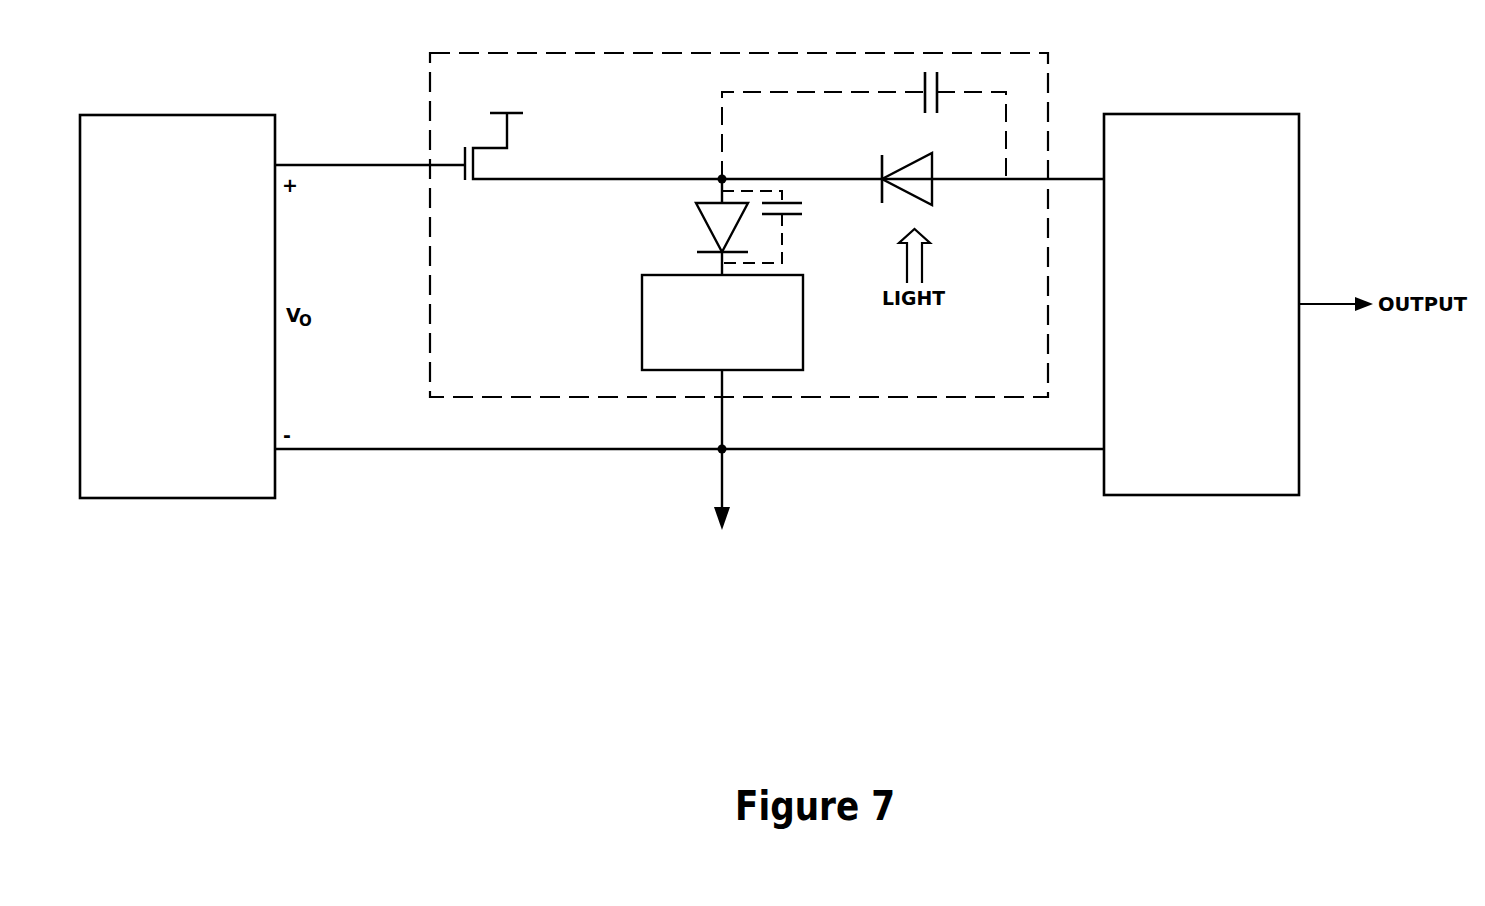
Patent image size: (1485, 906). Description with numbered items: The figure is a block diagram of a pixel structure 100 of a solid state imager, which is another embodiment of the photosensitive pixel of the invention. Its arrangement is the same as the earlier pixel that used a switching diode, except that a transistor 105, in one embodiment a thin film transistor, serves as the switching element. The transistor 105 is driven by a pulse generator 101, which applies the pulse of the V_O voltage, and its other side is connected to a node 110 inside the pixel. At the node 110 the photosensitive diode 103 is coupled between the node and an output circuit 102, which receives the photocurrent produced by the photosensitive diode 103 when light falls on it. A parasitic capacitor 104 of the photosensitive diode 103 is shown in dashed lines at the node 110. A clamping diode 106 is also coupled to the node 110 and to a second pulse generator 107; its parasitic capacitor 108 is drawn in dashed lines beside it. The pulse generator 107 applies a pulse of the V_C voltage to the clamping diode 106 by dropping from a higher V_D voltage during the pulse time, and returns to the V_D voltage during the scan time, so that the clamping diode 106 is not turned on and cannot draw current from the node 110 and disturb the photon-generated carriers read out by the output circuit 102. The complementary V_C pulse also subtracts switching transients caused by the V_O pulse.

The pixel structure 100 is at (895, 44).
The pulse generator 101 is at (238, 110).
The output circuit 102 is at (1264, 106).
The photosensitive diode 103 is at (942, 149).
The parasitic capacitor 104 is at (949, 80).
The transistor 105 is at (509, 161).
The clamping diode 106 is at (690, 227).
The pulse generator 107 is at (632, 294).
The parasitic capacitor 108 is at (815, 220).
The node 110 is at (710, 169).